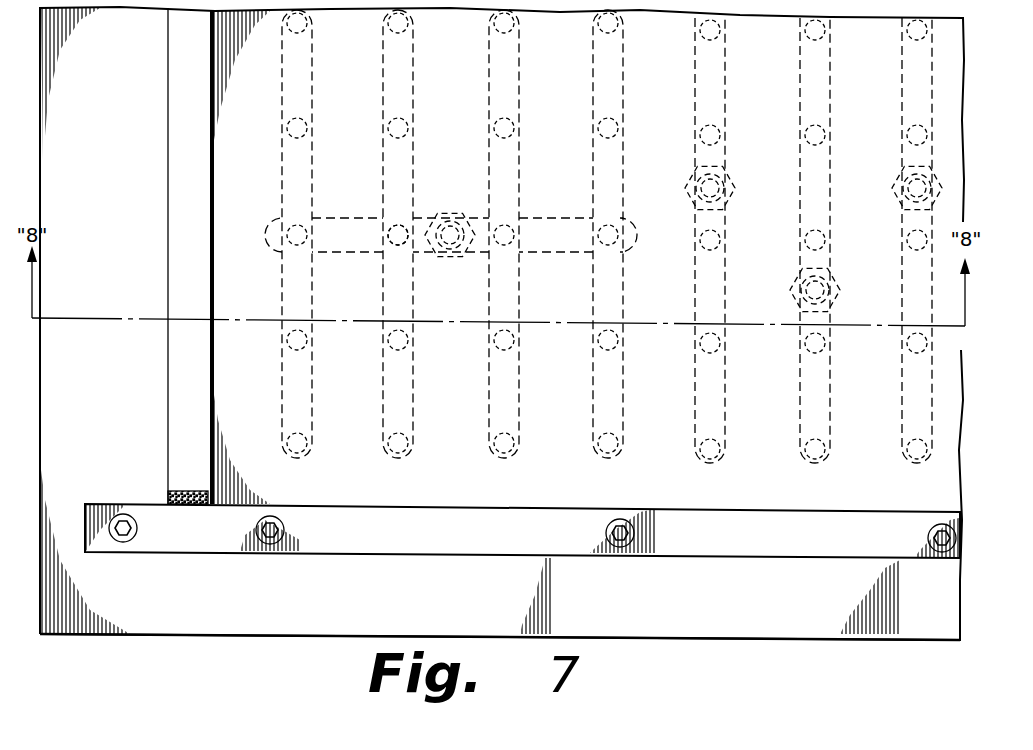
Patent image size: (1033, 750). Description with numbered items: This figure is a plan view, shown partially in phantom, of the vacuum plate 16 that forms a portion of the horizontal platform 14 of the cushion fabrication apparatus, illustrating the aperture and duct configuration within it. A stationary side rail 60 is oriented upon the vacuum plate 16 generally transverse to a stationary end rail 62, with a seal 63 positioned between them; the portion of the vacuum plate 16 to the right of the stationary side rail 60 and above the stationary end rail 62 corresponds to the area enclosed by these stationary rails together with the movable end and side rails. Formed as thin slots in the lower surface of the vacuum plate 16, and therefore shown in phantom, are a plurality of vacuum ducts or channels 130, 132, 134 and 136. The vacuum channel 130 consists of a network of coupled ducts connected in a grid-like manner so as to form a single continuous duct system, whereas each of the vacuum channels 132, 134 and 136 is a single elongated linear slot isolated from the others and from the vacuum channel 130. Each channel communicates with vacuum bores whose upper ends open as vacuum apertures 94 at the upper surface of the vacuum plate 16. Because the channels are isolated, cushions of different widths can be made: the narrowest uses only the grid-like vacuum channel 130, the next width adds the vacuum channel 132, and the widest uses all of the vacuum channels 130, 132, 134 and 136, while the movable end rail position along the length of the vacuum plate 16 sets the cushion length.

The horizontal platform 14 is at (236, 637).
The vacuum plate 16 is at (190, 601).
The stationary side rail 60 is at (190, 186).
The stationary end rail 62 is at (443, 541).
The seal 63 is at (167, 497).
The vacuum aperture 94 is at (412, 27).
The vacuum channel 130 is at (411, 350).
The vacuum channel 132 is at (696, 349).
The vacuum channel 134 is at (800, 353).
The vacuum channel 136 is at (903, 364).